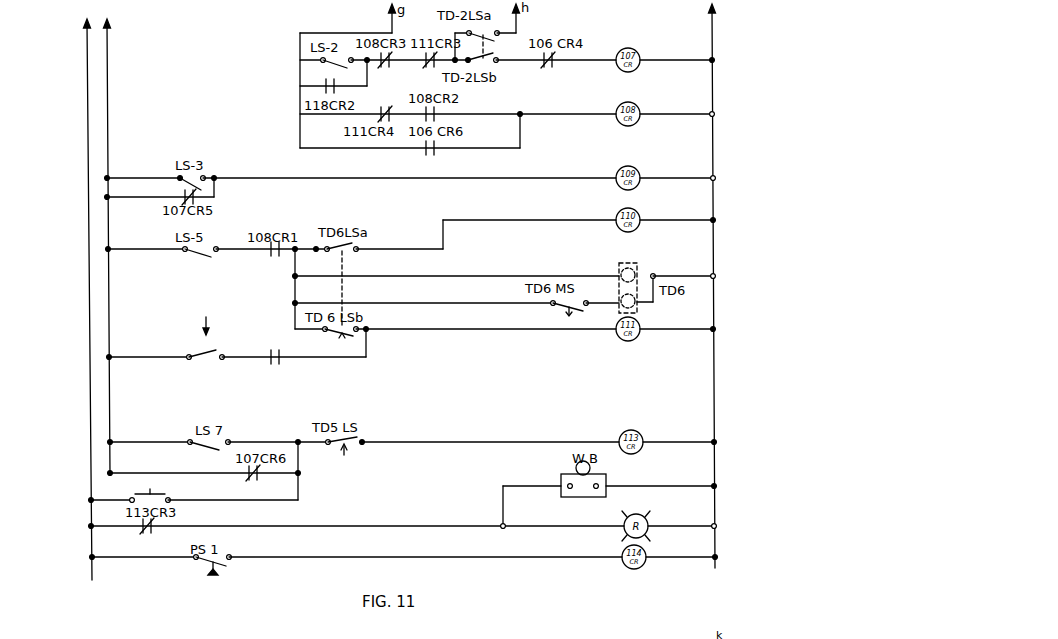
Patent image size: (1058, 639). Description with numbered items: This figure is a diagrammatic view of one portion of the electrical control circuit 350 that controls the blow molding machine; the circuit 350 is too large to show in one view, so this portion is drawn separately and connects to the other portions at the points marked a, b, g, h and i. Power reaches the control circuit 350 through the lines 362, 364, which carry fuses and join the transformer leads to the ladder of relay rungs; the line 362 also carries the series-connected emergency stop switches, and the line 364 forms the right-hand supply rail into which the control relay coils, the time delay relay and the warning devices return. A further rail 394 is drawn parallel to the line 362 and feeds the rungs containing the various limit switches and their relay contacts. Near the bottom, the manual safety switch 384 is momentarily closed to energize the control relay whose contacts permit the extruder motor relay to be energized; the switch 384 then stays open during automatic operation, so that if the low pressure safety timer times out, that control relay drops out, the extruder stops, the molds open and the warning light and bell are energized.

The control circuit 350 is at (46, 334).
The line 362 is at (88, 198).
The line 364 is at (714, 141).
The supply line b 394 is at (109, 292).
The manual safety switch 384 is at (157, 496).